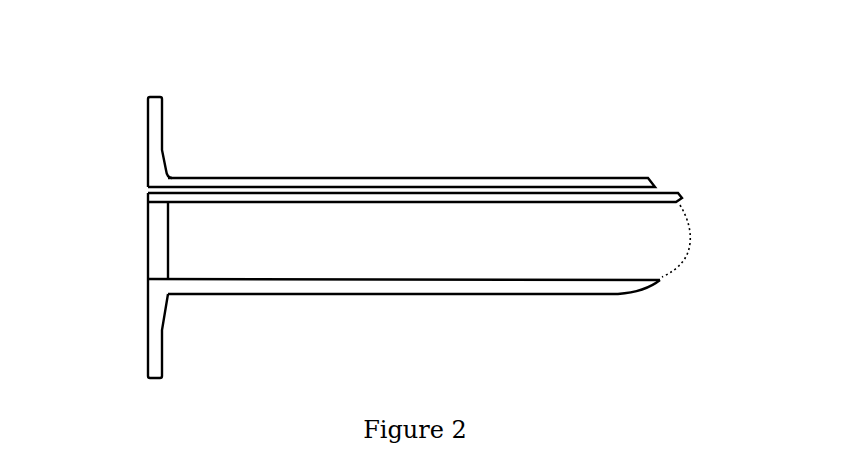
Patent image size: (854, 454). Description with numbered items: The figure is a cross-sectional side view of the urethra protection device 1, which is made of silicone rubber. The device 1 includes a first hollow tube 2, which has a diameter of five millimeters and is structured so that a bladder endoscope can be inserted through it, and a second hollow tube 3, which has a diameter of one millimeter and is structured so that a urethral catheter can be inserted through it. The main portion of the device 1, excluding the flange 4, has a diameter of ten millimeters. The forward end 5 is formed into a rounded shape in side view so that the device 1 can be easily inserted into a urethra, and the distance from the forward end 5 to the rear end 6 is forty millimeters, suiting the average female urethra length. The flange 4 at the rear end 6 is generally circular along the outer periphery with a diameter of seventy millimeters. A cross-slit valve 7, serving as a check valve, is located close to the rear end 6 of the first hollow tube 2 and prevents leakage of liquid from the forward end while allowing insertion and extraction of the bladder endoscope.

The urethra protection device 1 is at (506, 147).
The first hollow tube 2 is at (579, 263).
The second hollow tube 3 is at (630, 178).
The flange 4 is at (153, 93).
The forward end 5 is at (708, 244).
The rear end 6 is at (142, 293).
The cross-slit valve 7 is at (148, 252).